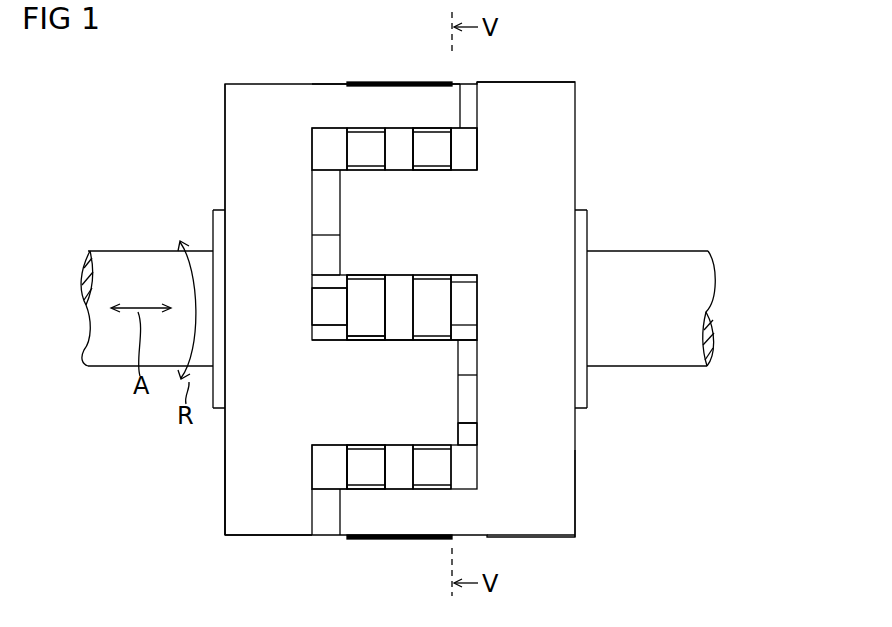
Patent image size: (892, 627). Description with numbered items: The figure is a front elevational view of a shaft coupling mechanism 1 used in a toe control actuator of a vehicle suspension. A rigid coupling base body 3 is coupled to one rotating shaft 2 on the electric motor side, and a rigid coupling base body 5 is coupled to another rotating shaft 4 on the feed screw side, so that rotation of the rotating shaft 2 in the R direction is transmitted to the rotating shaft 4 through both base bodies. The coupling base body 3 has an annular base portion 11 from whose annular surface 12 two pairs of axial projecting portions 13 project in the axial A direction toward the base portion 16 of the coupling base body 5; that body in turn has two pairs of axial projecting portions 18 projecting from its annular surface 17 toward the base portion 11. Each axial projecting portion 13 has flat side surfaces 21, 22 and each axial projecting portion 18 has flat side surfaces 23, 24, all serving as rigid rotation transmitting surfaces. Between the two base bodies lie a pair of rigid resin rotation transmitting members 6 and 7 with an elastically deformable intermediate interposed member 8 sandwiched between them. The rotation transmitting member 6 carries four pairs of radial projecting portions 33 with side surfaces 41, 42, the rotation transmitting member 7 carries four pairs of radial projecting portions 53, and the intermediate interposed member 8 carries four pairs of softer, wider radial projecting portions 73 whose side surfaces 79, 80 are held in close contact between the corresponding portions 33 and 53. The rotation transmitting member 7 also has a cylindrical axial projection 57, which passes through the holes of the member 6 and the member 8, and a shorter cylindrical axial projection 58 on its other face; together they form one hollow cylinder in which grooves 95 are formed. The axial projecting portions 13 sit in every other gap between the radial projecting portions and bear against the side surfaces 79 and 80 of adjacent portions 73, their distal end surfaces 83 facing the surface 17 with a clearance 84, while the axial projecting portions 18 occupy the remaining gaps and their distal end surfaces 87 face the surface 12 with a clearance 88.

The shaft coupling mechanism 1 is at (593, 93).
The rotating shaft 2 is at (119, 262).
The coupling base body 3 is at (222, 494).
The rotating shaft 4 is at (683, 352).
The coupling base body 5 is at (578, 482).
The rotation transmitting member 6 is at (340, 463).
The rotation transmitting member 7 is at (461, 124).
The intermediate interposed member 8 is at (397, 541).
The base portion 11 is at (233, 125).
The annular surface 12 is at (340, 183).
The axial projecting portions 13 is at (352, 100).
The base portion 16 is at (567, 512).
The annular surface 17 is at (472, 474).
The axial projecting portions 18 is at (355, 217).
The side surface 21 is at (312, 339).
The side surface 22 is at (363, 475).
The side surface 23 is at (395, 150).
The side surface 24 is at (398, 308).
The radial projecting portions 33 is at (363, 140).
The side surface 41 is at (365, 339).
The side surface 42 is at (358, 290).
The radial projecting portions 53 is at (437, 148).
The axial projection 57 is at (312, 273).
The axial projection 58 is at (471, 363).
The radial projecting portions 73 is at (437, 150).
The side surface 79 is at (398, 341).
The side surface 80 is at (400, 275).
The distal end surface 83 is at (461, 154).
The clearance 84 is at (475, 424).
The distal end surface 87 is at (316, 142).
The clearance 88 is at (343, 488).
The grooves 95 is at (322, 308).